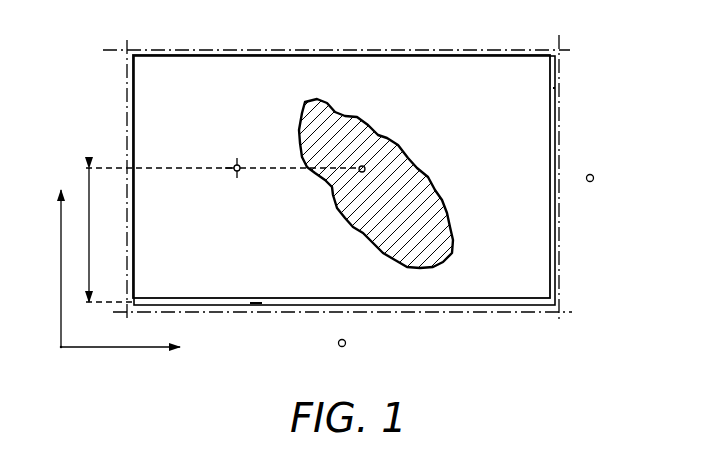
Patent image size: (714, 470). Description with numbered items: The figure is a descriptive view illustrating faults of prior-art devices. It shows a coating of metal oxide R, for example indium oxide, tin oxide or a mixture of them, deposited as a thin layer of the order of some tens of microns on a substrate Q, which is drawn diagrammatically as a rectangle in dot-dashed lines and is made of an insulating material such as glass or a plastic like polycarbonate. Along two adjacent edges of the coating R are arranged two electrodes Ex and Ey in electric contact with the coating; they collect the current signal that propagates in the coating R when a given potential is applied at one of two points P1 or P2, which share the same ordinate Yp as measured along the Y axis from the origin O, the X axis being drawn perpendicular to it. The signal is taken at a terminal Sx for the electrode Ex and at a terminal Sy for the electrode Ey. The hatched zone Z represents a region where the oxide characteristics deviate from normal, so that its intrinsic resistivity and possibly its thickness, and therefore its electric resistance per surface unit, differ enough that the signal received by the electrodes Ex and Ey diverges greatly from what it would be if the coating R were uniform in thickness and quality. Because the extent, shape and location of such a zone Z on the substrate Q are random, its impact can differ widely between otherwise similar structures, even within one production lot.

The coating of metal oxide R is at (312, 62).
The substrate Q is at (400, 50).
The zone Z is at (417, 168).
The point P1 is at (372, 183).
The point P2 is at (223, 179).
The ordinate Yp is at (109, 235).
The Y axis Y is at (50, 268).
The X axis X is at (120, 361).
The origin O is at (53, 351).
The electrode Ex is at (553, 88).
The electrode Ey is at (257, 304).
The terminal Sx is at (555, 178).
The terminal Sy is at (342, 304).